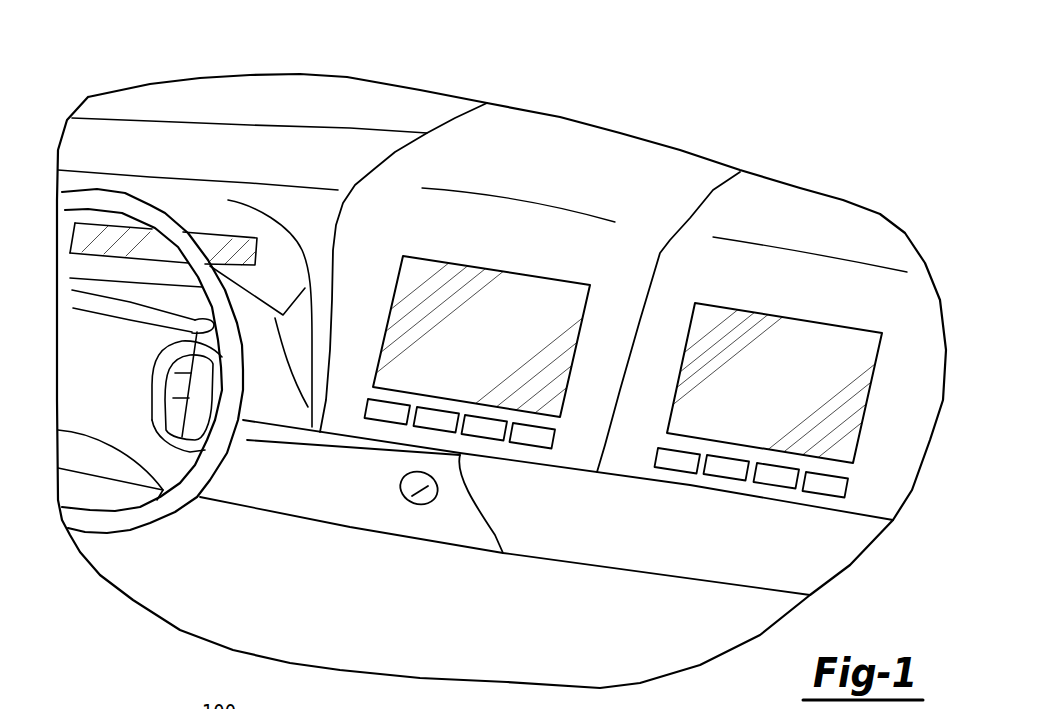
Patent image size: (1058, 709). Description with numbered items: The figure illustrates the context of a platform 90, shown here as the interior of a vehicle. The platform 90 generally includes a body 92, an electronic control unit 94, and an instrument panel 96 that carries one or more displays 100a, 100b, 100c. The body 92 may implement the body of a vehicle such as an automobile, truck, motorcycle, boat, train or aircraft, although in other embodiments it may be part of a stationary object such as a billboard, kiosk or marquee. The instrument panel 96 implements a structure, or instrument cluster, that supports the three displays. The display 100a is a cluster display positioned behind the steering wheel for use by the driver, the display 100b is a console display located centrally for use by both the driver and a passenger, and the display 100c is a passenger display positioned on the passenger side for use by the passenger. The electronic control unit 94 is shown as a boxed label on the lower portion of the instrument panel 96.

The platform 90 is at (652, 88).
The body 92 is at (250, 76).
The electronic control unit 94 is at (546, 510).
The instrument panel 96 is at (845, 227).
The display 100a is at (208, 232).
The display 100b is at (512, 272).
The display 100c is at (802, 320).